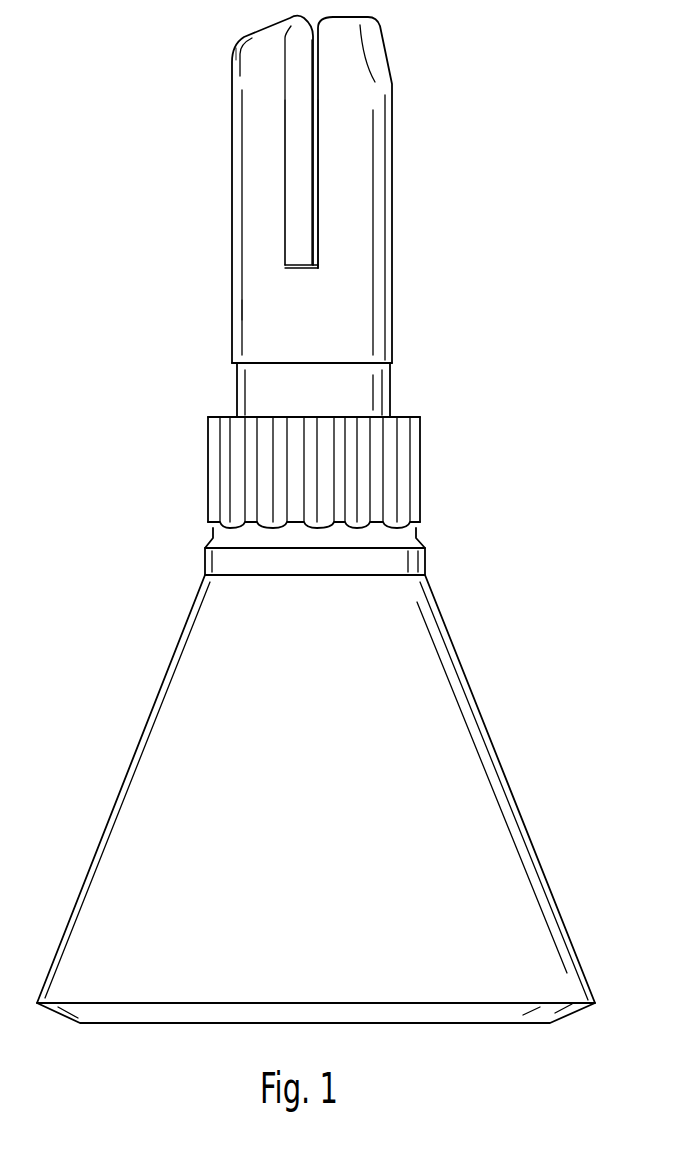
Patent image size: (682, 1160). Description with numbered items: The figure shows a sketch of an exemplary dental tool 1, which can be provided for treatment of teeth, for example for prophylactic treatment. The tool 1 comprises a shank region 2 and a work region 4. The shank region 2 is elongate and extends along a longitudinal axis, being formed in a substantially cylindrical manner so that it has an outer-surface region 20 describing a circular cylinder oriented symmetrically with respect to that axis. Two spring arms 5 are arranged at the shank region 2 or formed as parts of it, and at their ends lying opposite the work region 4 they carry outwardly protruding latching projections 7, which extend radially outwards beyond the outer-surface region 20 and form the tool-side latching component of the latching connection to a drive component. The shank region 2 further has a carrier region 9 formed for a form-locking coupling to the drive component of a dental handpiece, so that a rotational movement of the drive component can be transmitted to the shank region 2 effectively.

The dental tool 1 is at (533, 134).
The shank region 2 is at (370, 232).
The work region 4 is at (93, 900).
The spring arms 5 is at (250, 170).
The latching projections 7 is at (232, 58).
The carrier region 9 is at (218, 462).
The outer-surface region 20 is at (258, 307).